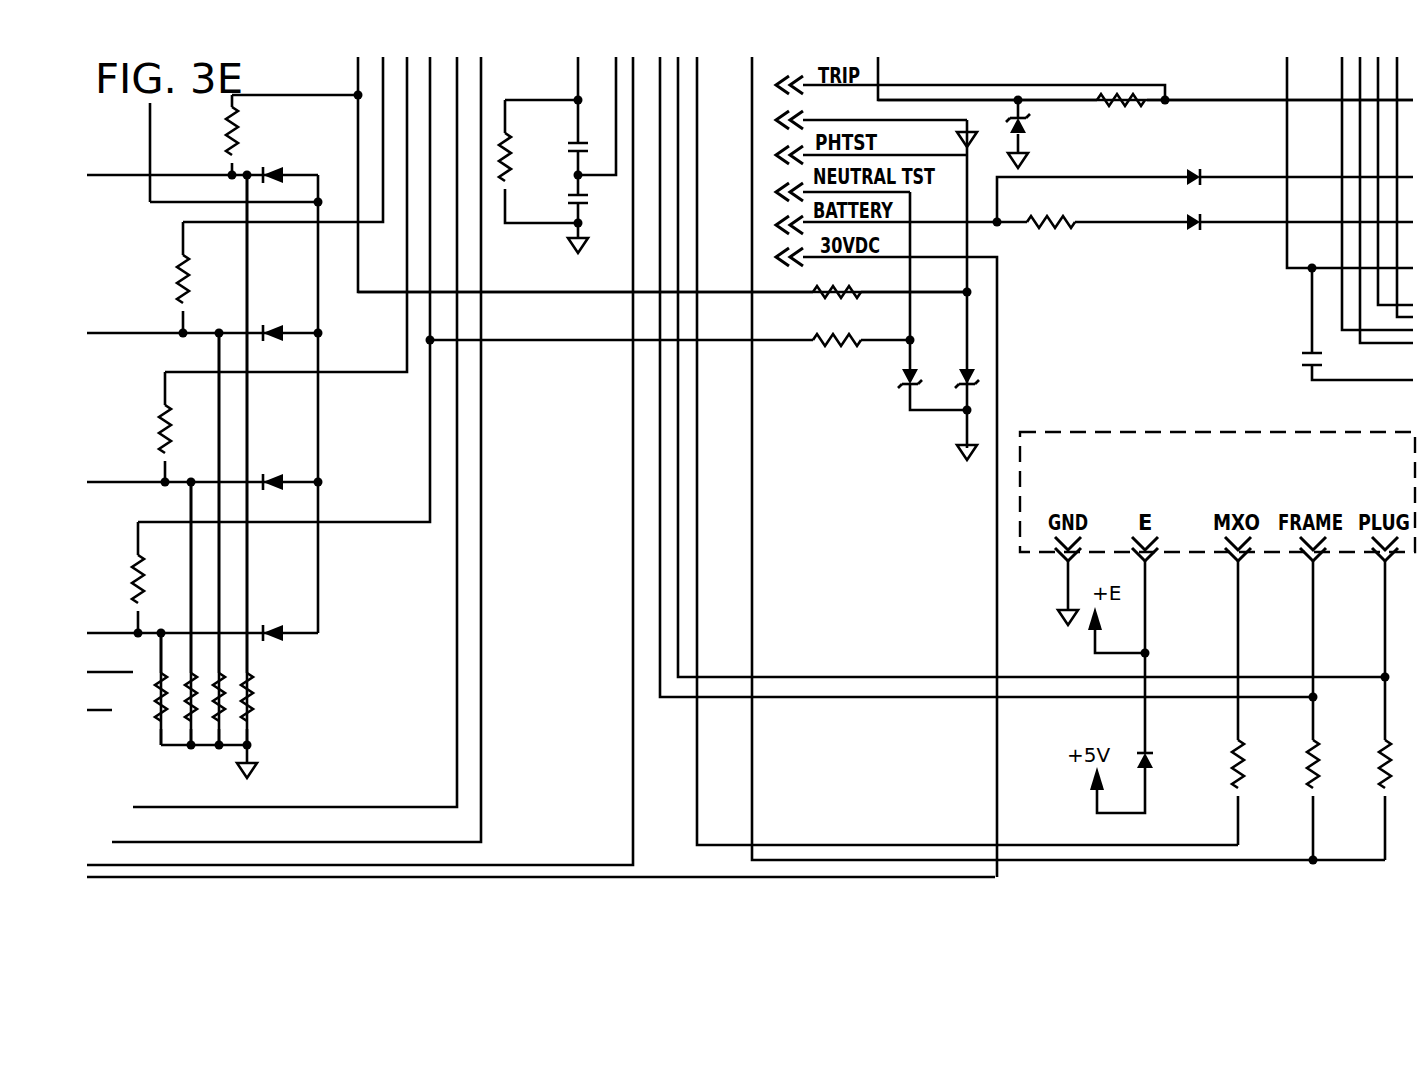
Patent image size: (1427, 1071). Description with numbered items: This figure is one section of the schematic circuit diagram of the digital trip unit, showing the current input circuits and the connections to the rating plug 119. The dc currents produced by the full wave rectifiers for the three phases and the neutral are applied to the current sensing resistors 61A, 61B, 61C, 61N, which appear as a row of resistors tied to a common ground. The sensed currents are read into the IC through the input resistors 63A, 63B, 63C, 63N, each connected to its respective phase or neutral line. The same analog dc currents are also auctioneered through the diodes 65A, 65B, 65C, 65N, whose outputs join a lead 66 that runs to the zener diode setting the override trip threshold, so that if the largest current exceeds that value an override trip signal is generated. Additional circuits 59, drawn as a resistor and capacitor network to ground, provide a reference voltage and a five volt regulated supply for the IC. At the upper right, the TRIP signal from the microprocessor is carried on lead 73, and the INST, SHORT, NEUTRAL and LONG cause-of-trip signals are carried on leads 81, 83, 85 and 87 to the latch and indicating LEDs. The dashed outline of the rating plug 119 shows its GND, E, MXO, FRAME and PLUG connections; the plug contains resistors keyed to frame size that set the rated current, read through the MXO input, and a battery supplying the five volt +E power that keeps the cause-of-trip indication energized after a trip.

The additional circuits 59 is at (546, 245).
The current sensing resistor 61A is at (250, 682).
The current sensing resistor 61B is at (243, 717).
The current sensing resistor 61C is at (192, 713).
The current sensing resistor 61N is at (157, 685).
The input resistor 63A is at (237, 130).
The input resistor 63B is at (181, 277).
The input resistor 63C is at (160, 440).
The input resistor 63N is at (134, 588).
The diode 65A is at (280, 167).
The diode 65B is at (273, 327).
The diode 65C is at (273, 476).
The diode 65N is at (307, 580).
The lead 66 is at (150, 125).
The lead 73 is at (1213, 100).
The lead 81 is at (1340, 158).
The lead 83 is at (1358, 207).
The lead 85 is at (1376, 238).
The lead 87 is at (1409, 318).
The rating plug 119 is at (1163, 432).